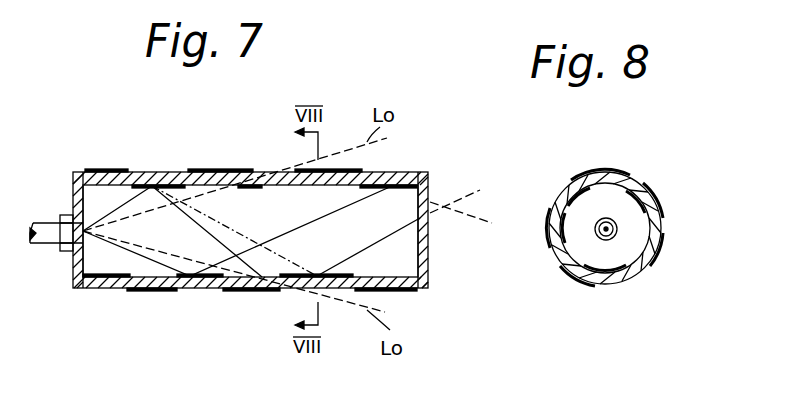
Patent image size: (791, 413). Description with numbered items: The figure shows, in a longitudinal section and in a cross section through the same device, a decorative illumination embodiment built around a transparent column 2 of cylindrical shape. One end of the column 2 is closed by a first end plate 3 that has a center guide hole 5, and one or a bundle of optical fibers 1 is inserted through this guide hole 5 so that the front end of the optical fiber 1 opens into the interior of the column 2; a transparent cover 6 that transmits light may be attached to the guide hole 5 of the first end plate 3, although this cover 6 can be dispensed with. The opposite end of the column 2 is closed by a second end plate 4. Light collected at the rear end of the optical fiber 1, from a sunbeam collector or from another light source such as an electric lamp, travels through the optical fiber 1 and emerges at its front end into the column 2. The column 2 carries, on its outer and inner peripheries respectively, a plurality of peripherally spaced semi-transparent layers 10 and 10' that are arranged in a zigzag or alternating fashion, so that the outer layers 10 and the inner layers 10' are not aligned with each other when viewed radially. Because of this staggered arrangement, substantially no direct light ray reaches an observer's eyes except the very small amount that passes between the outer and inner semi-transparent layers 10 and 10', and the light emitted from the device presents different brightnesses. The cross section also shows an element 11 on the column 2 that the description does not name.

In FIG. 7, the optical fiber 1 is at (53, 227).
In FIG. 8, the optical fiber 1 is at (600, 218).
In FIG. 7, the column 2 is at (393, 172).
In FIG. 8, the column 2 is at (565, 195).
In FIG. 7, the first end plate 3 is at (73, 190).
In FIG. 8, the first end plate 3 is at (637, 252).
In FIG. 7, the second end plate 4 is at (430, 265).
In FIG. 7, the center guide hole 5 is at (62, 246).
In FIG. 8, the center guide hole 5 is at (598, 237).
In FIG. 7, the transparent cover 6 is at (85, 231).
In FIG. 8, the transparent cover 6 is at (608, 226).
In FIG. 7, the outer semi-transparent layers 10 is at (251, 235).
In FIG. 8, the outer semi-transparent layers 10 is at (604, 209).
In FIG. 7, the inner semi-transparent layers 10' is at (188, 204).
In FIG. 7, the electrode plate 11 is at (353, 276).
In FIG. 8, the electrode plate 11 is at (602, 287).